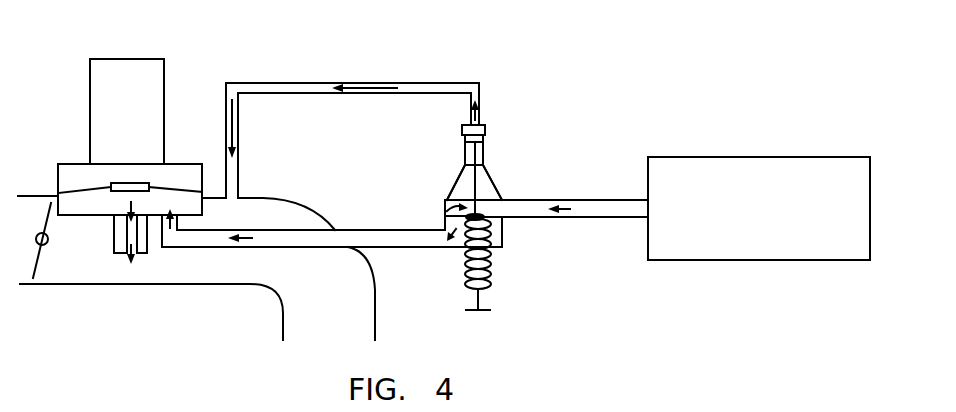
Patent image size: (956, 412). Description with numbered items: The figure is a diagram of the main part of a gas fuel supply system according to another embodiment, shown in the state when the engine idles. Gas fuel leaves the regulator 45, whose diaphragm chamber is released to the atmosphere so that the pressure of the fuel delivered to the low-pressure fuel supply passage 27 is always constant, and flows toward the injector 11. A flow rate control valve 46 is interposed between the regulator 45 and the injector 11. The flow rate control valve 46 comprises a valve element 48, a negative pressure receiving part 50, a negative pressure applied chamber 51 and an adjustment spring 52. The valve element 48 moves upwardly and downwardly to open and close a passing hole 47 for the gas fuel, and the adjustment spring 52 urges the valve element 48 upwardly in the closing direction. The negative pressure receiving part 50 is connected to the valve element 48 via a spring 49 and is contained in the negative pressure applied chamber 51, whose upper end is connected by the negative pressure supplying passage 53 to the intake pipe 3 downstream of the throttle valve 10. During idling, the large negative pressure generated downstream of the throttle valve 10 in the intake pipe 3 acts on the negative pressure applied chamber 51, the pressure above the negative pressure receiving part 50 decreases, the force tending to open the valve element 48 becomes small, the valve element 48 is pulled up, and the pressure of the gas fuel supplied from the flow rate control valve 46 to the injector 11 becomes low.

The injector 11 is at (106, 55).
The throttle valve 10 is at (38, 262).
The intake pipe 3 is at (203, 287).
The negative pressure supplying passage 53 is at (335, 83).
The flow rate control valve 46 is at (522, 104).
The negative pressure receiving part 50 is at (485, 141).
The negative pressure applied chamber 51 is at (462, 140).
The spring 49 is at (477, 189).
The passing hole 47 is at (446, 200).
The valve element 48 is at (500, 247).
The adjustment spring 52 is at (490, 288).
The low-pressure fuel supply passage 27 is at (582, 218).
The regulator 45 is at (746, 217).